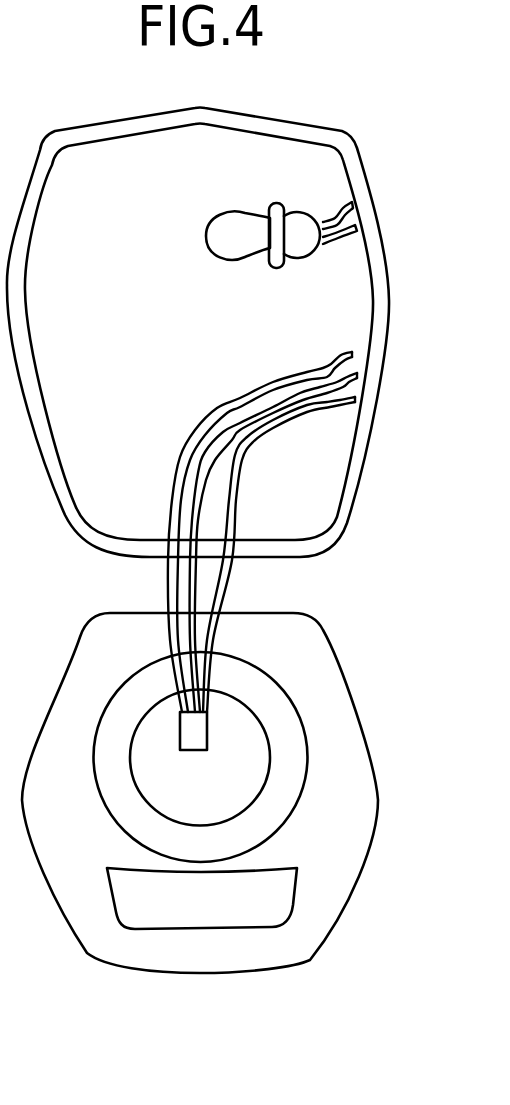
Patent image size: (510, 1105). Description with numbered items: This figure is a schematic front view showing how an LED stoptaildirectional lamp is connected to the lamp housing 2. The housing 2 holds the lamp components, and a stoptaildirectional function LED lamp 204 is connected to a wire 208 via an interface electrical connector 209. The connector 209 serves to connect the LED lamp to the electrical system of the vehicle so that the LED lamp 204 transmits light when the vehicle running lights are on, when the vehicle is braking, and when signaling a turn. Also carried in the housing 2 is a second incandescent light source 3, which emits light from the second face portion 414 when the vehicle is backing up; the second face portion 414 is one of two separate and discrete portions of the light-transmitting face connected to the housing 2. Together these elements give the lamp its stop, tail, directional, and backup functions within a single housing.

The housing 2 is at (357, 143).
The second incandescent light source 3 is at (248, 212).
The stoptaildirectional function LED lamp 204 is at (290, 720).
The wire 208 is at (173, 602).
The interface electrical connector 209 is at (200, 721).
The second face portion 414 is at (285, 902).